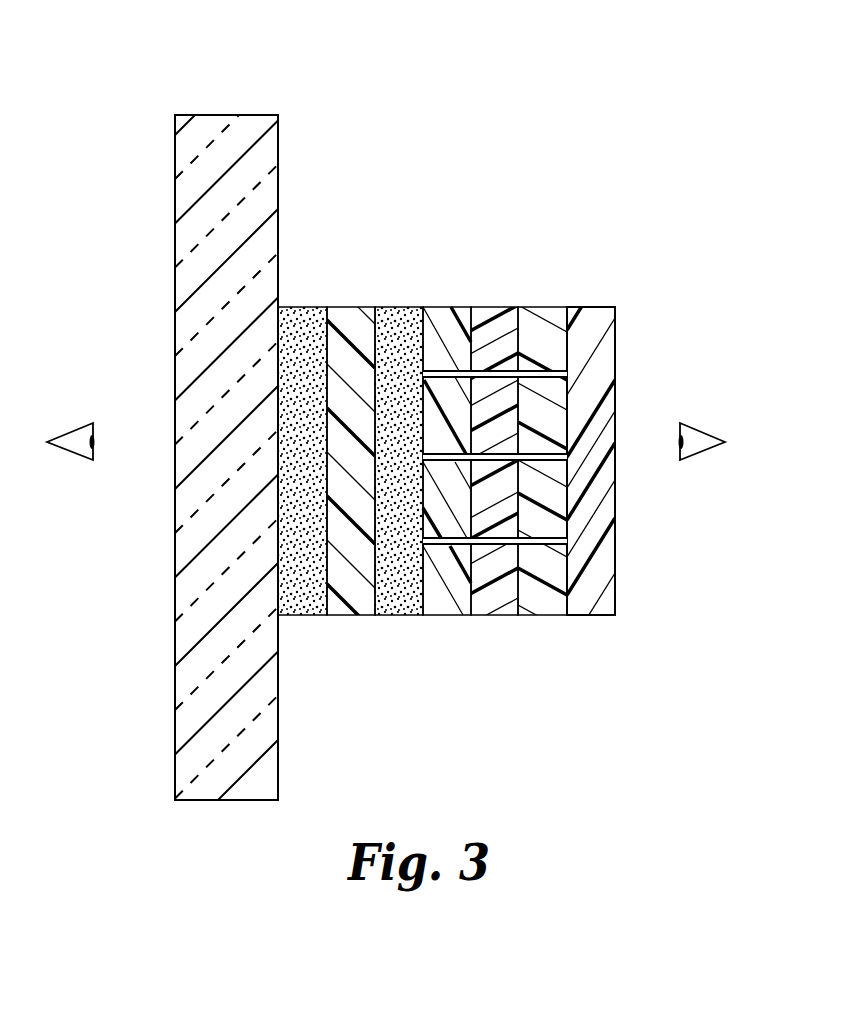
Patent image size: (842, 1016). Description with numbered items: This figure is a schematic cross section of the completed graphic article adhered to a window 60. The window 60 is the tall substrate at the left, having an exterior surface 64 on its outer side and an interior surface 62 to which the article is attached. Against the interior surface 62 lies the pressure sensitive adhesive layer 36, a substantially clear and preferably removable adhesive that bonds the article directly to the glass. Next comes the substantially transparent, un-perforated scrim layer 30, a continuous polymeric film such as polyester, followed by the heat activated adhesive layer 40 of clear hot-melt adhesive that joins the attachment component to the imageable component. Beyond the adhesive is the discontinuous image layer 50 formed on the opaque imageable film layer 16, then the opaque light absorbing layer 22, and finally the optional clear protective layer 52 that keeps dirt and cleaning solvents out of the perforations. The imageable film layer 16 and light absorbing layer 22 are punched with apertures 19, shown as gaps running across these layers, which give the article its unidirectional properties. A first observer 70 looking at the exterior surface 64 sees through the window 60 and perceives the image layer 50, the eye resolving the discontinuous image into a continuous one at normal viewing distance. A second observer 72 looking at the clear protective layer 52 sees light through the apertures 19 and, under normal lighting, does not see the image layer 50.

The window 60 is at (221, 103).
The interior surface 62 is at (279, 133).
The exterior surface 64 is at (175, 149).
The pressure sensitive adhesive layer 36 is at (302, 306).
The scrim layer 30 is at (353, 317).
The heat activated adhesive layer 40 is at (410, 317).
The image layer 50 is at (438, 605).
The imageable film layer 16 is at (491, 605).
The light absorbing layer 22 is at (543, 605).
The clear protective layer 52 is at (602, 605).
The apertures 19 is at (518, 367).
The first observer 70 is at (72, 426).
The second observer 72 is at (702, 428).